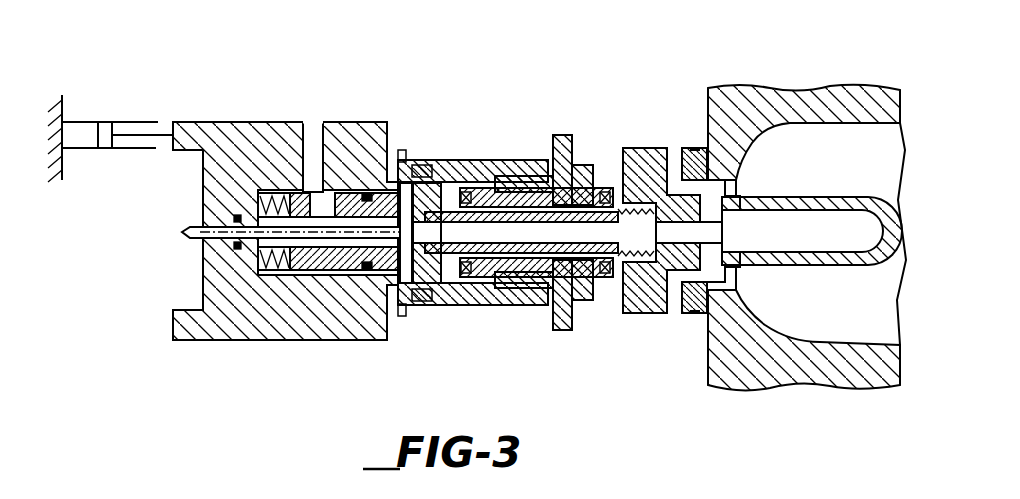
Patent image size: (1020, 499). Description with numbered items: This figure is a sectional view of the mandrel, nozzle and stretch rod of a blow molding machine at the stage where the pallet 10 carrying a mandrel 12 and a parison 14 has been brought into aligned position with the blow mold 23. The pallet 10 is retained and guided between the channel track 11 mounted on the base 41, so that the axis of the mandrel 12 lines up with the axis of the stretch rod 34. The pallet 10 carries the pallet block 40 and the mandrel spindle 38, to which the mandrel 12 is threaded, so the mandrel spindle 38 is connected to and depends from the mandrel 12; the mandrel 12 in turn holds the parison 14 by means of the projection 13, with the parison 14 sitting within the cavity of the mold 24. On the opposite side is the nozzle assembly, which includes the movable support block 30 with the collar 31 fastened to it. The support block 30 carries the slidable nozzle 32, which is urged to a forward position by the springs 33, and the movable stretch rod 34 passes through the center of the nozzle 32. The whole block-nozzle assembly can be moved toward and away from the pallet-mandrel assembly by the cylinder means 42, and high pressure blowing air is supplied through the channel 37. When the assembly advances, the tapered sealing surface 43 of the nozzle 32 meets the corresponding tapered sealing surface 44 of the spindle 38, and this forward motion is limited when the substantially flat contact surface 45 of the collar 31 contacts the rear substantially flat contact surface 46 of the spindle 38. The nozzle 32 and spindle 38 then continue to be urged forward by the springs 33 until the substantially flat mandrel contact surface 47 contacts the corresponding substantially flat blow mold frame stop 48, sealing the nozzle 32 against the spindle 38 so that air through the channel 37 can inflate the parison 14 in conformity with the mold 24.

The pallet 10 is at (563, 136).
The channel track 11 is at (520, 186).
The mandrel 12 is at (646, 313).
The projection 13 is at (682, 190).
The parison 14 is at (852, 200).
The blow mold 23 is at (835, 90).
The mold 24 is at (832, 174).
The support block 30 is at (190, 330).
The collar 31 is at (368, 275).
The nozzle 32 is at (330, 275).
The springs 33 is at (260, 275).
The stretch rod 34 is at (182, 240).
The channel 37 is at (313, 135).
The mandrel spindle 38 is at (520, 298).
The pallet block 40 is at (590, 165).
The base 41 is at (487, 165).
The cylinder means 42 is at (85, 140).
The tapered sealing surface 43 is at (404, 300).
The tapered sealing surface 44 is at (428, 290).
The contact surface 45 is at (412, 180).
The contact surface 46 is at (440, 178).
The mandrel contact surface 47 is at (676, 316).
The blow mold frame stop 48 is at (695, 150).